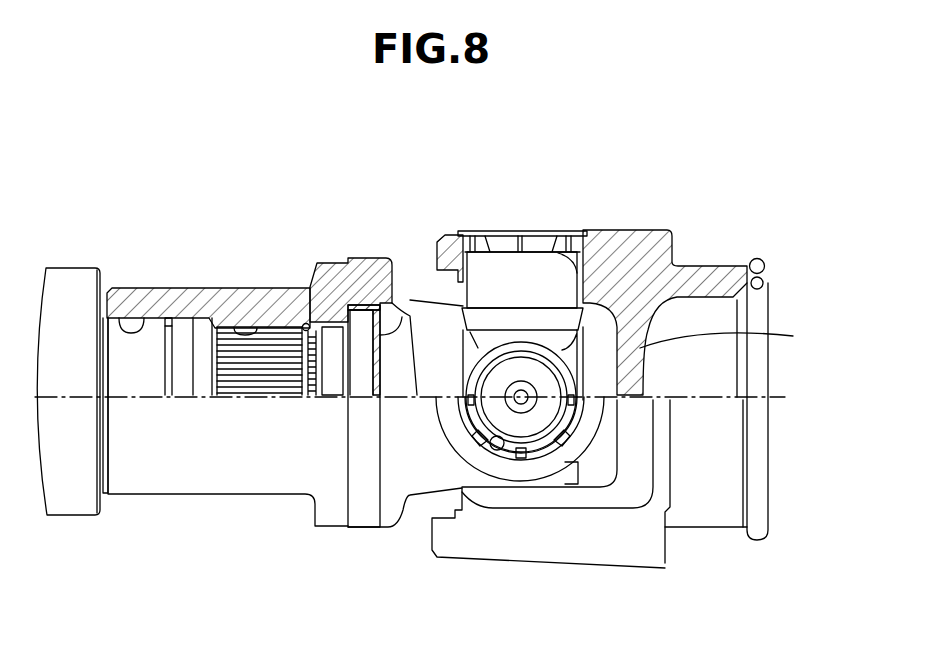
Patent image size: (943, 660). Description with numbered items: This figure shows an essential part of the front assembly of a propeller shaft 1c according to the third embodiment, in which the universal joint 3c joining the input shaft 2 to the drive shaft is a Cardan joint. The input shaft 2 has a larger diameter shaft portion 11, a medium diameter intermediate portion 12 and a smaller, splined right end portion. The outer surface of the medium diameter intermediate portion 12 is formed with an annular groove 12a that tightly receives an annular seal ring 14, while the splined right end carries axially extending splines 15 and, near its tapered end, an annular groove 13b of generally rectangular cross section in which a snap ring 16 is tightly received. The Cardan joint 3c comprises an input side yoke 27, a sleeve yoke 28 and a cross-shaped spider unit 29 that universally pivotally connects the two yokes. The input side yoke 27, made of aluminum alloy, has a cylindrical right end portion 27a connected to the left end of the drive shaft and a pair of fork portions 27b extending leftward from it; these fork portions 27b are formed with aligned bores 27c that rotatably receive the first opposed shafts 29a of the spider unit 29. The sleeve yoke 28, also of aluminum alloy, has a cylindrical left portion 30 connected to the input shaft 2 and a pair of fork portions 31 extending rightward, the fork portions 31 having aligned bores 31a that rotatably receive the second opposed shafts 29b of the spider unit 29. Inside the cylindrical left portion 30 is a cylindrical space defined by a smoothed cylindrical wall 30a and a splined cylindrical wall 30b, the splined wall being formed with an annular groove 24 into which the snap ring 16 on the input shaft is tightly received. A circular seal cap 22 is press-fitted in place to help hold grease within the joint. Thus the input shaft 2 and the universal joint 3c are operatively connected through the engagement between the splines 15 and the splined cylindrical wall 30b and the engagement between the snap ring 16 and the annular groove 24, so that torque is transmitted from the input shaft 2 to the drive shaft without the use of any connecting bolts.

The propeller shaft 1c is at (636, 140).
The input shaft 2 is at (80, 535).
The universal joint 3c is at (514, 176).
The larger diameter shaft portion 11 is at (60, 517).
The medium diameter intermediate portion 12 is at (186, 398).
The annular groove 12a is at (172, 398).
The annular groove 13b is at (258, 398).
The annular seal ring 14 is at (168, 318).
The splines 15 is at (283, 398).
The snap ring 16 is at (313, 398).
The seal cap 22 is at (404, 292).
The annular groove 24 is at (306, 323).
The input side yoke 27 is at (669, 228).
The cylindrical right end portion 27a is at (710, 272).
The fork portions 27b is at (455, 236).
The aligned bores 27c is at (548, 335).
The sleeve yoke 28 is at (226, 282).
The spider unit 29 is at (622, 250).
The first opposed shafts 29a is at (573, 614).
The second opposed shafts 29b is at (577, 440).
The cylindrical left portion 30 is at (191, 296).
The smoothed cylindrical wall 30a is at (118, 312).
The splined cylindrical wall 30b is at (257, 328).
The fork portions 31 is at (432, 472).
The aligned bores 31a is at (505, 450).